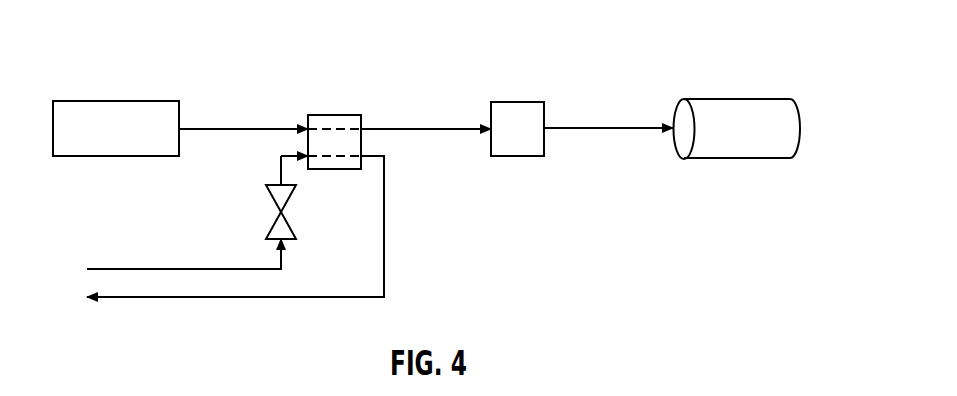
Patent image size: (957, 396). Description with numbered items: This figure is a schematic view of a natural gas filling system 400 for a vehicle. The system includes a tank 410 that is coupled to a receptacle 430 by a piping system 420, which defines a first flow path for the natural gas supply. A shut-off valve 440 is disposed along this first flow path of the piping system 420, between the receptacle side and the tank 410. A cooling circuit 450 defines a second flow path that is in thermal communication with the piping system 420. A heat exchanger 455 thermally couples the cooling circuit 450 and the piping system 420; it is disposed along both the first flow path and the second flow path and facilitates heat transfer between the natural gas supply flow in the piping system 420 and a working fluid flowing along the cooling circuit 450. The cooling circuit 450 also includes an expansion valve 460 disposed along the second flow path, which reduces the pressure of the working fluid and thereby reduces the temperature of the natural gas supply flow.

The natural gas filling system 400 is at (780, 46).
The tank 410 is at (765, 142).
The piping system 420 is at (427, 128).
The receptacle 430 is at (137, 141).
The shut-off valve 440 is at (518, 102).
The cooling circuit 450 is at (384, 208).
The heat exchanger 455 is at (335, 115).
The expansion valve 460 is at (268, 193).